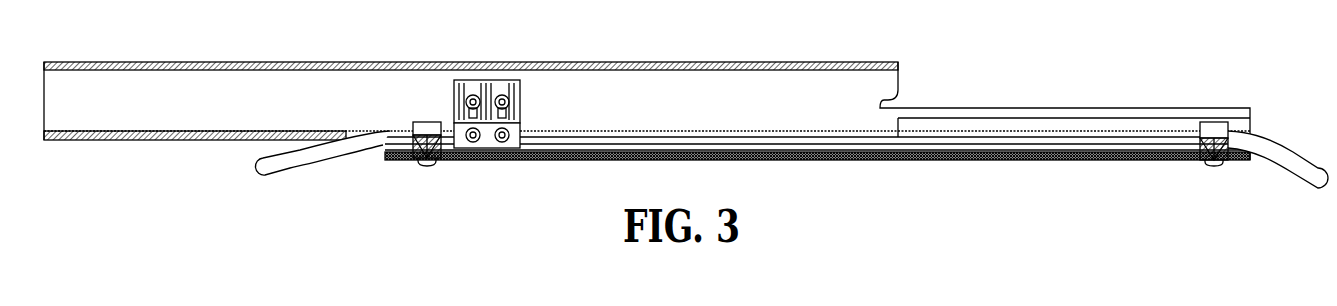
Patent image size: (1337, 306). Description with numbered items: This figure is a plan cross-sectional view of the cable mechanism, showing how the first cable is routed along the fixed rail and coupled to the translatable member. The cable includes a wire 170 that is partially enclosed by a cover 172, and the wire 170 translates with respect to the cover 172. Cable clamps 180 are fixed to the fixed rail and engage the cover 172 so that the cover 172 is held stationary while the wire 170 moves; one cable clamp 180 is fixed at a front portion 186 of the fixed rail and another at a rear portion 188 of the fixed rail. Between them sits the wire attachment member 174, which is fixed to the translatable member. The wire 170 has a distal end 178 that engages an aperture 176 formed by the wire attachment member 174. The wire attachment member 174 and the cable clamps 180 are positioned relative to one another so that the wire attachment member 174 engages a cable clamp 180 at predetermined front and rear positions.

The wire 170 is at (450, 153).
The cover 172 is at (320, 157).
The wire attachment member 174 is at (515, 144).
The aperture 176 is at (456, 124).
The distal end 178 is at (462, 128).
The cable clamp 180 is at (1213, 122).
The front portion 186 is at (400, 163).
The rear portion 188 is at (1242, 165).